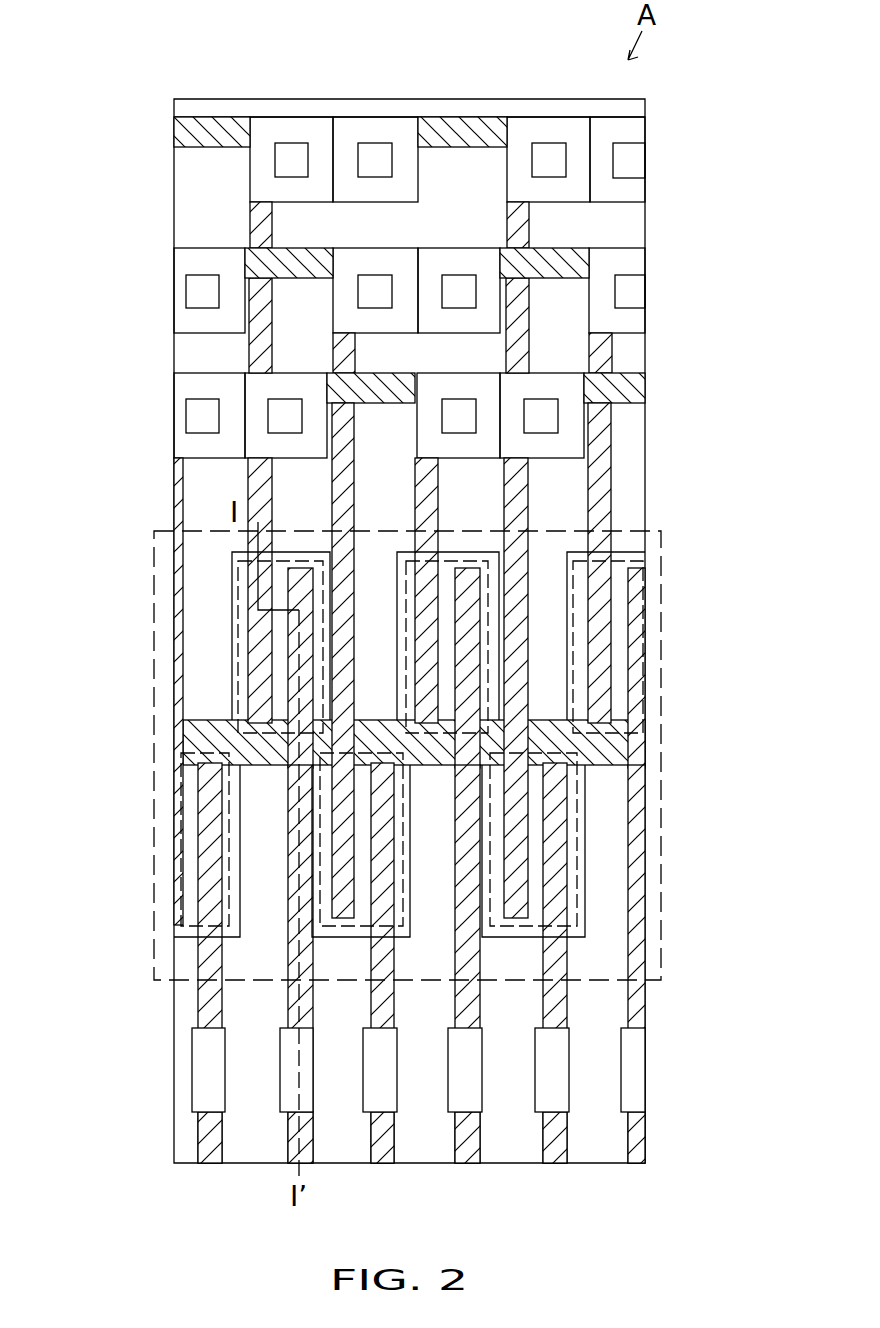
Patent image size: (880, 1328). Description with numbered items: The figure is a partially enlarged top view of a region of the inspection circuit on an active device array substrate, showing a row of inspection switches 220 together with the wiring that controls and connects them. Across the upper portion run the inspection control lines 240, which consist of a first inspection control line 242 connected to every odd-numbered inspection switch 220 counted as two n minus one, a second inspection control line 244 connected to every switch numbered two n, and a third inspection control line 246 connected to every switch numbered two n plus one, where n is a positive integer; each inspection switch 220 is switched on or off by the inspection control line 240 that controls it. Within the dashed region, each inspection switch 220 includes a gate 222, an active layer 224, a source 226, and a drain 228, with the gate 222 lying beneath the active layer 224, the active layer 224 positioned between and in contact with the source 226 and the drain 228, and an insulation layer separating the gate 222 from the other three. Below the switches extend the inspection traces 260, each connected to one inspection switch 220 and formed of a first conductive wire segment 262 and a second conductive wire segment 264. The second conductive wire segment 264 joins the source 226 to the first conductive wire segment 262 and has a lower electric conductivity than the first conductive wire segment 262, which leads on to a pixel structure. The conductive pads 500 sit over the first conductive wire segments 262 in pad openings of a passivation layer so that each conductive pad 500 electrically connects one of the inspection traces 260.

The inspection control lines 240 is at (714, 118).
The first inspection control line 242 is at (488, 132).
The second inspection control line 244 is at (575, 262).
The third inspection control line 246 is at (630, 392).
The inspection switch 220 is at (662, 560).
The gate 222 is at (379, 783).
The active layer 224 is at (320, 548).
The source 226 is at (297, 582).
The drain 228 is at (268, 483).
The inspection traces 260 is at (342, 963).
The first conductive wire segment 262 is at (203, 1133).
The second conductive wire segment 264 is at (197, 1003).
The conductive pads 500 is at (203, 1062).